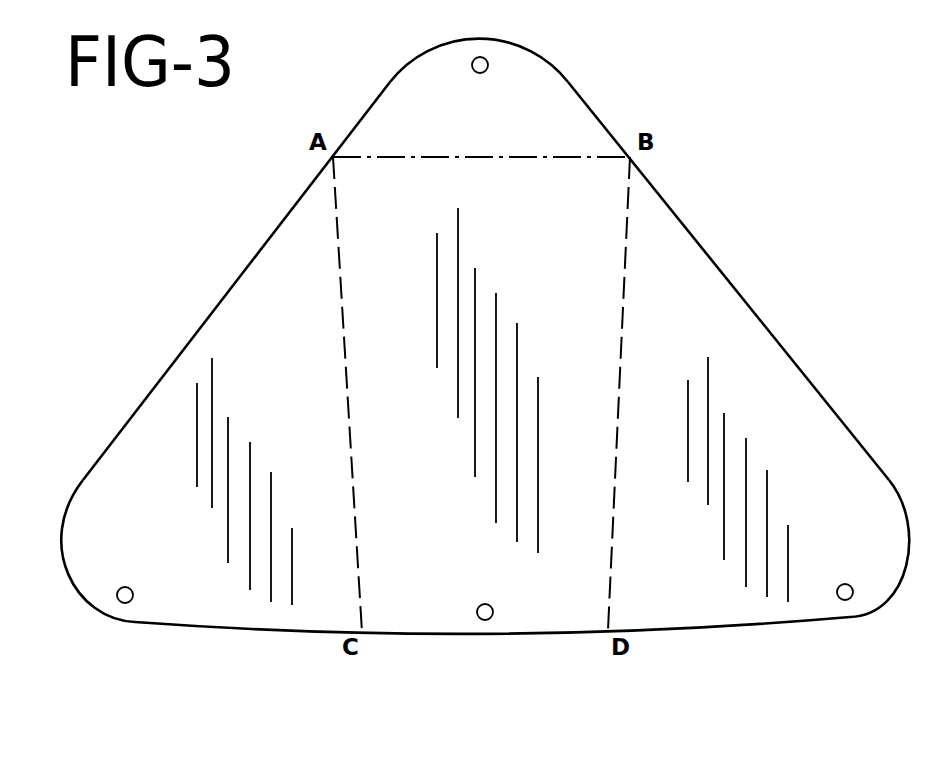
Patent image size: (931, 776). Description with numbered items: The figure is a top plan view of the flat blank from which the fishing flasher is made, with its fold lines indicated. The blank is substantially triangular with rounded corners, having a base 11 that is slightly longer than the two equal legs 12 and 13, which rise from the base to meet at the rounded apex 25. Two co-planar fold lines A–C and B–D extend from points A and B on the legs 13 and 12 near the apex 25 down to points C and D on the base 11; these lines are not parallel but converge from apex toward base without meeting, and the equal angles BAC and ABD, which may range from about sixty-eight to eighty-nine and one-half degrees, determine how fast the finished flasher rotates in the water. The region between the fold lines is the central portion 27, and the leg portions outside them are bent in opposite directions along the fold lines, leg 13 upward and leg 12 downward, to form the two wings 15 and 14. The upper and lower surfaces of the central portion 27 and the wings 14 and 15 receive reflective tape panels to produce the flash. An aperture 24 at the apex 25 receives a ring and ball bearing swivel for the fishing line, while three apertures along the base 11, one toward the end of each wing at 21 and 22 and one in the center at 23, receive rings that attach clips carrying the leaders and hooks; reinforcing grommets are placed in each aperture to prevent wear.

The base 11 is at (392, 633).
The leg 12 is at (722, 262).
The leg 13 is at (162, 372).
The wing 14 is at (702, 585).
The wing 15 is at (165, 460).
The aperture 21 is at (127, 603).
The aperture 22 is at (845, 600).
The aperture 23 is at (485, 620).
The aperture 24 is at (481, 57).
The apex 25 is at (413, 67).
The central portion 27 is at (545, 570).